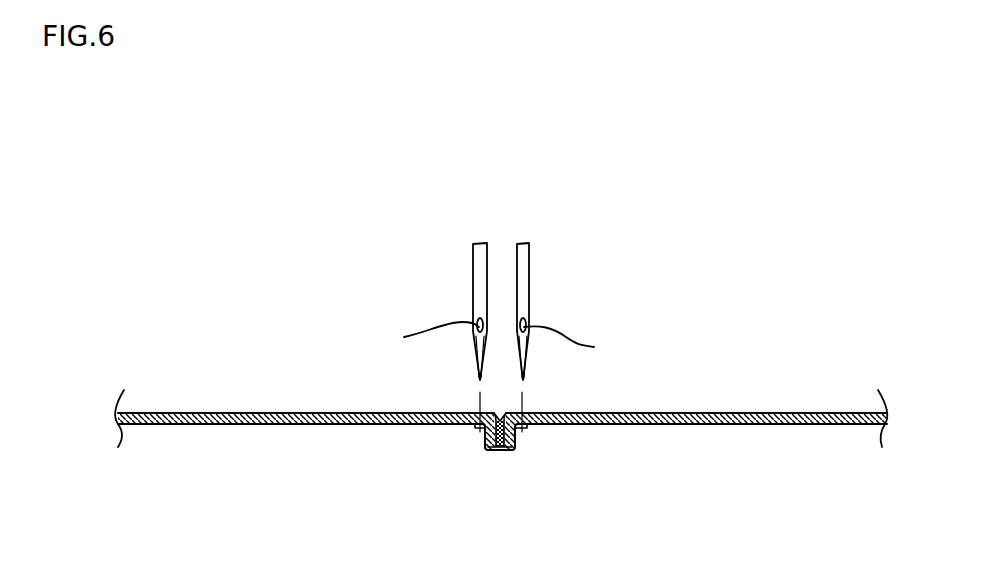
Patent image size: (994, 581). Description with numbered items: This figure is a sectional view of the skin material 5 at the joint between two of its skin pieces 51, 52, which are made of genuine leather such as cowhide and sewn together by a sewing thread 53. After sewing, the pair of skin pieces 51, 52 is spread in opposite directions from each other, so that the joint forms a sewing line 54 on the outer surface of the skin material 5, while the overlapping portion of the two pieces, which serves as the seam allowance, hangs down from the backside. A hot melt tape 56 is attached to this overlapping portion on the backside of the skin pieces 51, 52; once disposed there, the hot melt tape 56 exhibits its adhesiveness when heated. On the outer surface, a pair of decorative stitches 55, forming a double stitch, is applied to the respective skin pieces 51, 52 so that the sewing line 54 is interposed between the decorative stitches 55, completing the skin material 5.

The skin material 5 is at (218, 229).
The skin piece 51 is at (258, 413).
The skin piece 52 is at (718, 413).
The sewing thread 53 is at (503, 447).
The sewing line 54 is at (500, 413).
The decorative stitches 55 is at (477, 430).
The hot melt tape 56 is at (497, 450).